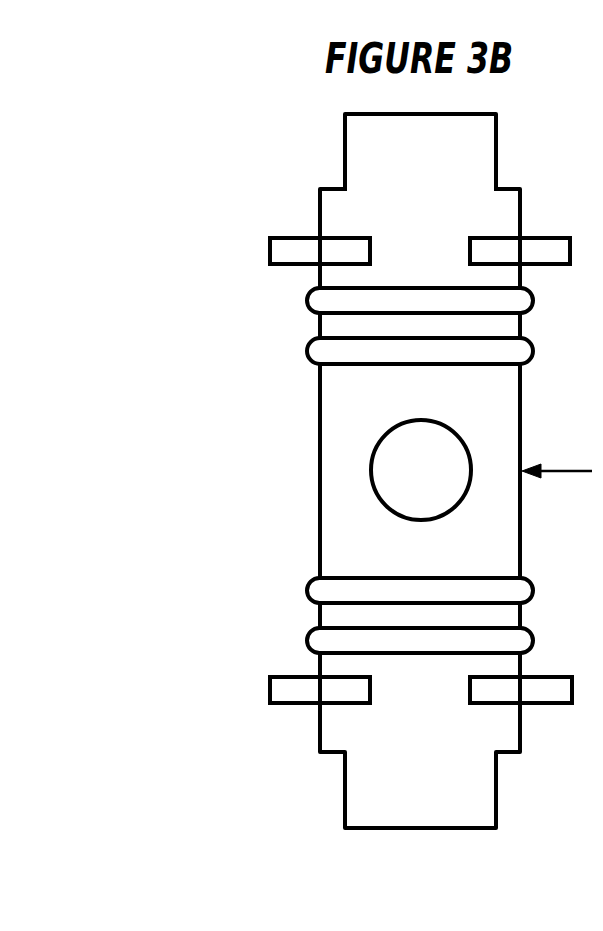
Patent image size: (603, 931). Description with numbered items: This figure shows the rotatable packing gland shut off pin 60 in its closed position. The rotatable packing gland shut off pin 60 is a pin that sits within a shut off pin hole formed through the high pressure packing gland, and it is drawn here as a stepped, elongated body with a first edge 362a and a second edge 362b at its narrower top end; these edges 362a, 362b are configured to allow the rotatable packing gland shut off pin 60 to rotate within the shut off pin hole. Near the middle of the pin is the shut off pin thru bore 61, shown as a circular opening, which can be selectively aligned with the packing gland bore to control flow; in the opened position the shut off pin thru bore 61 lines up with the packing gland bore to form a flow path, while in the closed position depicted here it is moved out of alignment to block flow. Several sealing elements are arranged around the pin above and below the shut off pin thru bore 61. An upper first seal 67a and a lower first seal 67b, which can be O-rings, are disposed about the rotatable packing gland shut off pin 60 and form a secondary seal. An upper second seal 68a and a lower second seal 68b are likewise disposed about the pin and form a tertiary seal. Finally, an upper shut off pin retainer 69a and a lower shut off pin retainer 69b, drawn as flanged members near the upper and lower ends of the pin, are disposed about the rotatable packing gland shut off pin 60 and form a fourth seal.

The rotatable packing gland shut off pin 60 is at (223, 113).
The first edge 362a is at (345, 152).
The second edge 362b is at (496, 152).
The upper shut off pin retainer 69a is at (270, 252).
The upper second seal 68a is at (533, 300).
The upper first seal 67a is at (533, 350).
The shut off pin thru bore 61 is at (382, 472).
The lower first seal 67b is at (533, 590).
The lower second seal 68b is at (533, 640).
The lower shut off pin retainer 69b is at (270, 690).